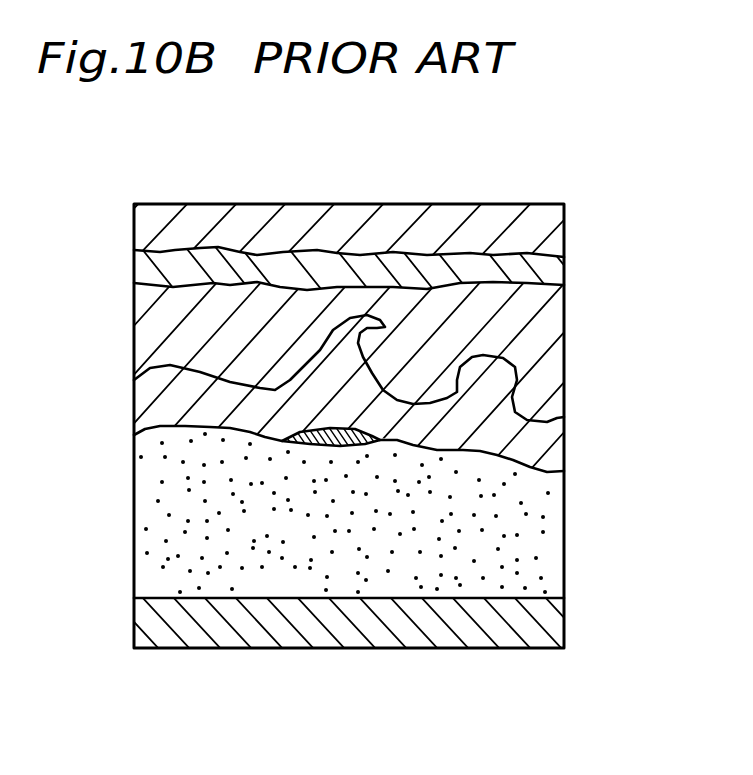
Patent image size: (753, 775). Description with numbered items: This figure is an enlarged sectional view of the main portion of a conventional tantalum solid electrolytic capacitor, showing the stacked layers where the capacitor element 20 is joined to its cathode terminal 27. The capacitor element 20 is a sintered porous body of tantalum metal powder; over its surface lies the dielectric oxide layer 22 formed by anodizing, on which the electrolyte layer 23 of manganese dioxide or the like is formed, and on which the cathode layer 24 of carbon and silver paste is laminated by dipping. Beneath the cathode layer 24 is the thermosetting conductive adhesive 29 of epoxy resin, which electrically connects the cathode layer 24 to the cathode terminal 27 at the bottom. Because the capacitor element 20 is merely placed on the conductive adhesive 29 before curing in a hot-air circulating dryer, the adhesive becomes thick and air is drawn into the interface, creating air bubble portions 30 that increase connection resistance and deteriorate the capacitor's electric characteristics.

The capacitor element 20 is at (555, 224).
The dielectric oxide layer 22 is at (552, 268).
The electrolyte layer 23 is at (540, 317).
The cathode layer 24 is at (527, 428).
The cathode terminal 27 is at (547, 613).
The thermosetting conductive adhesive 29 is at (550, 497).
The air bubble portions 30 is at (288, 448).